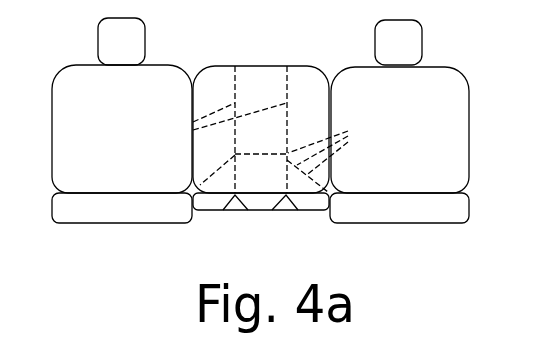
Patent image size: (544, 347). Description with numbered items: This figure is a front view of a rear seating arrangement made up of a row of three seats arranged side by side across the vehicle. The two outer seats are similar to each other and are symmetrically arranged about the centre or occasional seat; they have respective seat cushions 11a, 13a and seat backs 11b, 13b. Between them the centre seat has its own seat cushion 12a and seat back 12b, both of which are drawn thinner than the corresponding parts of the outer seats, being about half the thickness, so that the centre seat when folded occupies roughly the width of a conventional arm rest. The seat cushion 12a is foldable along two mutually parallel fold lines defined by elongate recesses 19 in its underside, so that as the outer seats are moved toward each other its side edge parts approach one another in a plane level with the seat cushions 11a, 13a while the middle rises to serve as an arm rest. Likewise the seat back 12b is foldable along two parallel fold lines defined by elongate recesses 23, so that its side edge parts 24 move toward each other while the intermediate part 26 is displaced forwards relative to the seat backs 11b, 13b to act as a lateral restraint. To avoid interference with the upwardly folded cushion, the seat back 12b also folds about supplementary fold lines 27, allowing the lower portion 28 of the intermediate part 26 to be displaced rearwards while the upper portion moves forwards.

The seat cushion 11a is at (80, 213).
The seat back 11b is at (80, 93).
The seat cushion 12a is at (303, 212).
The seat back 12b is at (295, 70).
The seat cushion 13a is at (424, 212).
The seat back 13b is at (439, 95).
The elongate recesses 19 is at (290, 212).
The elongate recesses 23 is at (193, 126).
The side edge parts 24 is at (192, 93).
The intermediate part 26 is at (257, 90).
The supplementary fold lines 27 is at (335, 151).
The lower portion 28 is at (252, 170).